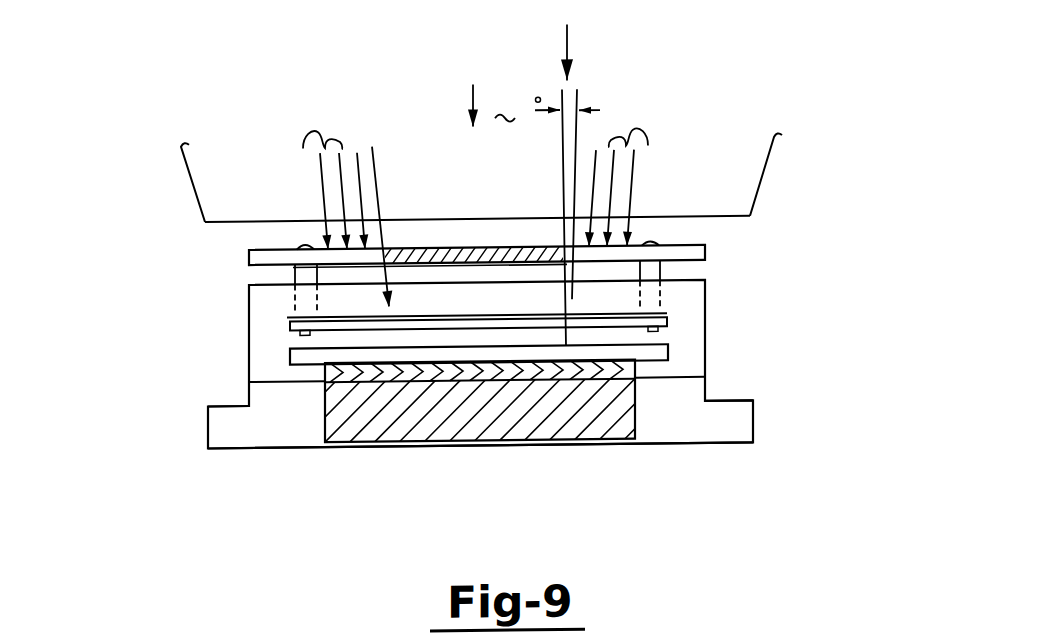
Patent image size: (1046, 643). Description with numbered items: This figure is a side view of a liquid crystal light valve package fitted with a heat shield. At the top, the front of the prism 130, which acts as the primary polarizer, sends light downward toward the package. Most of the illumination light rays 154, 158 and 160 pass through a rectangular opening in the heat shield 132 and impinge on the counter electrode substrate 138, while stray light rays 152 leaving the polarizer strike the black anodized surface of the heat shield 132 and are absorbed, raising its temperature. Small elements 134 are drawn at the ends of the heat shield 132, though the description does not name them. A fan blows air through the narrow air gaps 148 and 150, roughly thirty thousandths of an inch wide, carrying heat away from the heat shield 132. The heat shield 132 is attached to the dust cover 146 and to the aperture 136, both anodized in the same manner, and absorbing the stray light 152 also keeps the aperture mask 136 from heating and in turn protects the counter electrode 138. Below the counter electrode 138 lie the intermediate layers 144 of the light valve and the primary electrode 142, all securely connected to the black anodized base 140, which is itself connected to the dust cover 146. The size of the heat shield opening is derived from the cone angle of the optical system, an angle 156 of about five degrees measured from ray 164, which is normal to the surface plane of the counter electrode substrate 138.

The prism 130 is at (194, 188).
The heat shield 132 is at (248, 256).
The clips 134 is at (293, 243).
The aperture 136 is at (288, 326).
The counter electrode substrate 138 is at (290, 354).
The base 140 is at (233, 423).
The primary electrode 142 is at (430, 440).
The intermediate layers 144 is at (563, 383).
The dust cover 146 is at (706, 353).
The air gap 148 is at (623, 277).
The air gap 150 is at (650, 219).
The stray light rays 152 is at (343, 150).
The light ray 154 is at (470, 87).
The angle 156 is at (567, 30).
The light ray 158 is at (377, 192).
The light ray 160 is at (564, 213).
The ray 164 is at (563, 185).